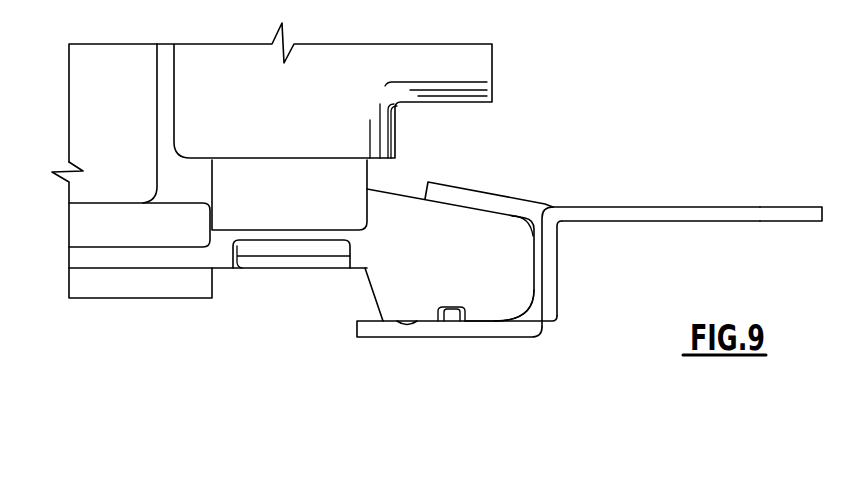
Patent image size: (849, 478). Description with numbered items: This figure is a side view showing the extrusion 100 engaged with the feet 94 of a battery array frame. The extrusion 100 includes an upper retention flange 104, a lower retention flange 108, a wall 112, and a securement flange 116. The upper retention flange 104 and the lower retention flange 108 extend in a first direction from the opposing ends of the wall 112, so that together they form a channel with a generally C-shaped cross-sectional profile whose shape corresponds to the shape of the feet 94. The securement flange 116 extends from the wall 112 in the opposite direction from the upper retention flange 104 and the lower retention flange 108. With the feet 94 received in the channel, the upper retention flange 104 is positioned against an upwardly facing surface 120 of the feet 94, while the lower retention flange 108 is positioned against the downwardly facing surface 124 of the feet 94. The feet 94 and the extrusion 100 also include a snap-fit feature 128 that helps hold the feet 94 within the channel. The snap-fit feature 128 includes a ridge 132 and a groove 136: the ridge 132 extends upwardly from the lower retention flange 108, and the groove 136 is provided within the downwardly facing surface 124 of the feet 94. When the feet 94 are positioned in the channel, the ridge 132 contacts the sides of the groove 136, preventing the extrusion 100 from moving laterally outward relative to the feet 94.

The feet 94 is at (512, 236).
The extrusion 100 is at (643, 208).
The upper retention flange 104 is at (482, 196).
The lower retention flange 108 is at (528, 338).
The wall 112 is at (560, 270).
The securement flange 116 is at (698, 205).
The upwardly facing surface 120 is at (454, 201).
The downwardly facing surface 124 is at (403, 321).
The snap-fit feature 128 is at (467, 340).
The ridge 132 is at (463, 315).
The groove 136 is at (448, 320).